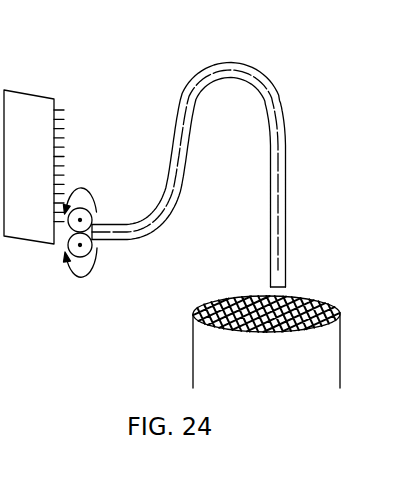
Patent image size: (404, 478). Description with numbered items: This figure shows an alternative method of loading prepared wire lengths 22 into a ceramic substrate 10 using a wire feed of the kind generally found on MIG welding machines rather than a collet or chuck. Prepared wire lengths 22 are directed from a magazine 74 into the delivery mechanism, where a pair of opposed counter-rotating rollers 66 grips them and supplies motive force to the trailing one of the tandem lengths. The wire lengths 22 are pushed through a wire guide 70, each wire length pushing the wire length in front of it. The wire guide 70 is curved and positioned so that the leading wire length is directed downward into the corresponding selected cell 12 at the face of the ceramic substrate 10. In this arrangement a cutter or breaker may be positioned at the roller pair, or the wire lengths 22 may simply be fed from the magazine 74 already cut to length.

The ceramic substrate 10 is at (323, 338).
The selected cell 12 is at (288, 297).
The wire lengths 22 is at (186, 136).
The counter-rotating rollers 66 is at (87, 174).
The wire guide 70 is at (266, 82).
The magazine 74 is at (36, 107).